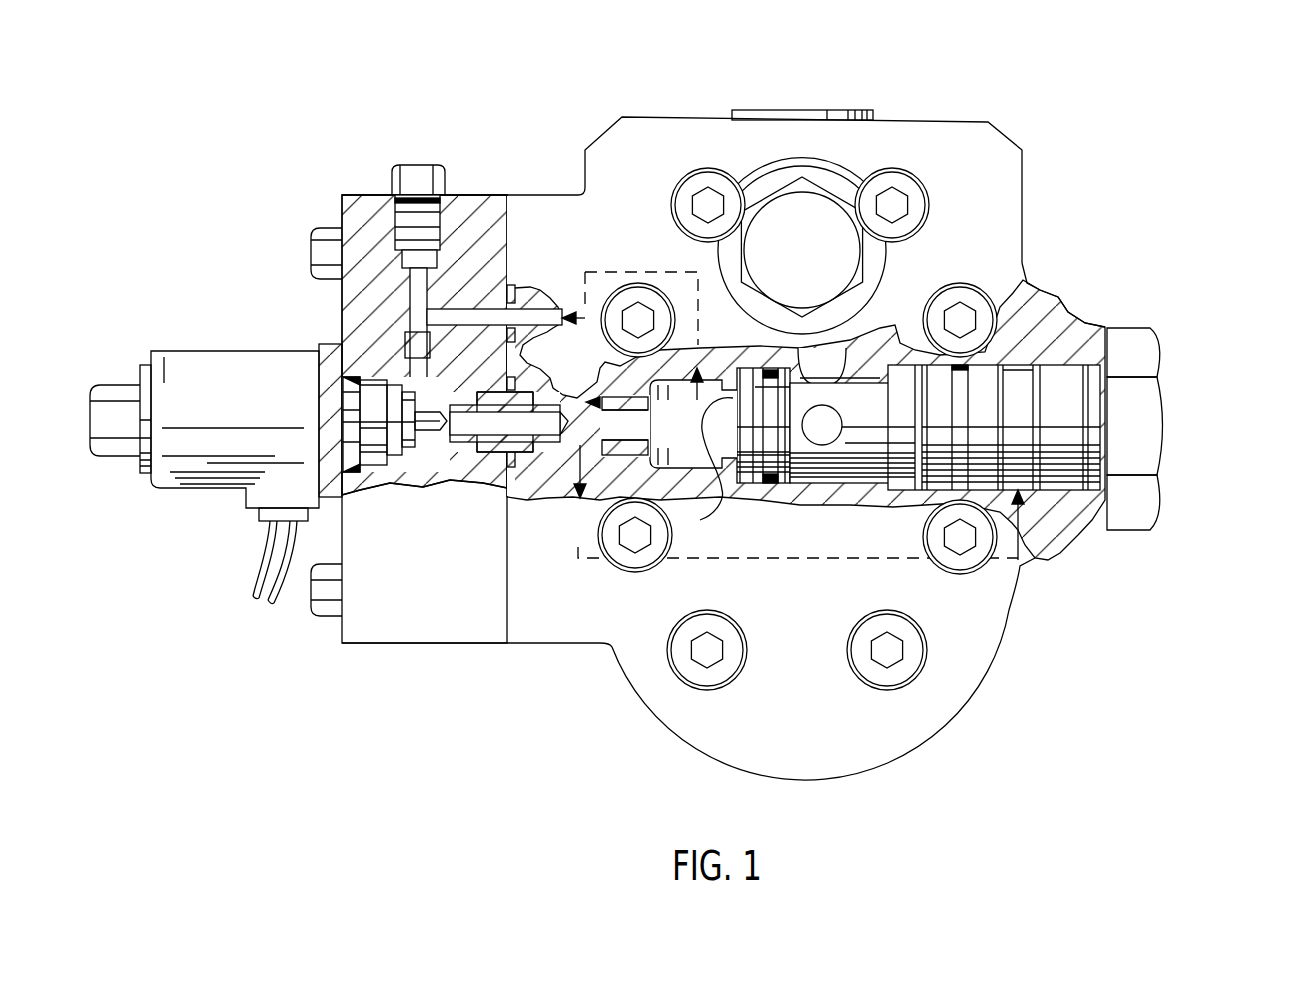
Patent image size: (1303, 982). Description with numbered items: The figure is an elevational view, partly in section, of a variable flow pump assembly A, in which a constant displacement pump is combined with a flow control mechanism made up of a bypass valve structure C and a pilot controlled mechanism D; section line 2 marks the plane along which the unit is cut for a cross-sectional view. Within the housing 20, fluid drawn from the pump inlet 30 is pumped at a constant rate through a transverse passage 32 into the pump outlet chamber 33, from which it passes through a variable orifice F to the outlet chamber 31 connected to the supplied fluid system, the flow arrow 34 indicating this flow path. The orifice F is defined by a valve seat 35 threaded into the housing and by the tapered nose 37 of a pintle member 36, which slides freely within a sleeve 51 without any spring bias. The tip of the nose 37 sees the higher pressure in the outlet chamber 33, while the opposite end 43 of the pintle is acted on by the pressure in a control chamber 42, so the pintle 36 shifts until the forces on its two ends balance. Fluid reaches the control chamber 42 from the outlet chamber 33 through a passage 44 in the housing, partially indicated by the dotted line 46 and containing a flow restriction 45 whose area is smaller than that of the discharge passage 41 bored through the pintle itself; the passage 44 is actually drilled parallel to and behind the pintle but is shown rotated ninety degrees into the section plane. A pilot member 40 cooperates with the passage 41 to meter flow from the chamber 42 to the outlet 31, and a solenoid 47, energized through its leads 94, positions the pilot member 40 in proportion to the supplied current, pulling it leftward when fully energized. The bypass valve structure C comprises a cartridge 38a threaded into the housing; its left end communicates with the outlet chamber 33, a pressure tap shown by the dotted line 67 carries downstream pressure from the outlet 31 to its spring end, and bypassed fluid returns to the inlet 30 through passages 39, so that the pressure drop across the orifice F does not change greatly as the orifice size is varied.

The section line 2- 2 is at (800, 798).
The valve body 20 is at (723, 428).
The pump inlet 30 is at (847, 108).
The outlet chamber 31 is at (511, 470).
The transverse passage 32 is at (700, 512).
The pump outlet chamber 33 is at (697, 450).
The passage 34 is at (580, 500).
The valve seat 35 is at (578, 550).
The pintle member 36 is at (470, 450).
The tapered nose 37 is at (548, 385).
The cartridge 38a is at (862, 434).
The passages 39 is at (893, 330).
The pilot member 40 is at (437, 462).
The passage 41 is at (456, 452).
The control chamber 42 is at (392, 462).
The opposite end 43 is at (470, 395).
The passage 44 is at (466, 322).
The flow restriction 45 is at (405, 347).
The dotted line 46 is at (612, 272).
The solenoid 47 is at (179, 488).
The sleeve 51 is at (493, 452).
The dotted line 67 is at (857, 558).
The wires 94 is at (252, 583).
The variable flow pump assembly A is at (1105, 652).
The bypass valve structure C is at (1190, 413).
The pilot controlled mechanism D is at (358, 359).
The variable orifice F is at (632, 357).